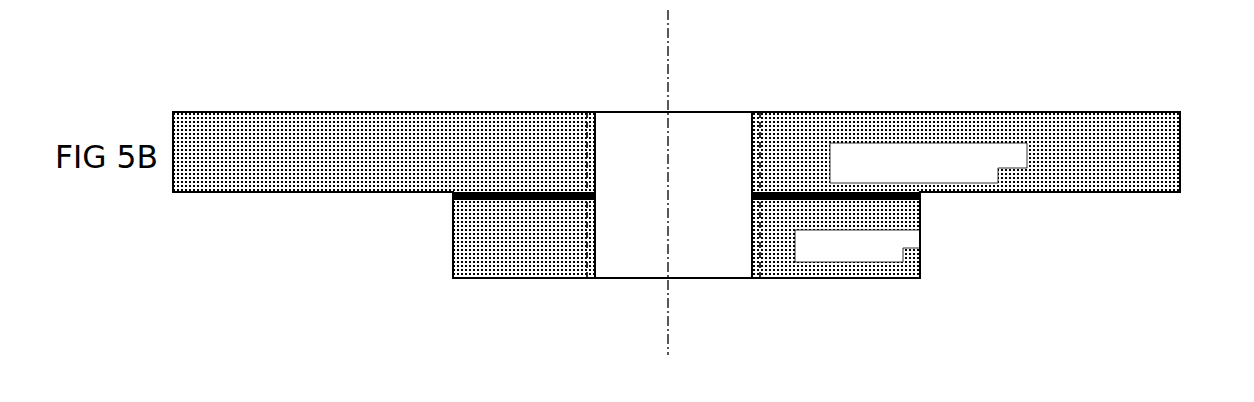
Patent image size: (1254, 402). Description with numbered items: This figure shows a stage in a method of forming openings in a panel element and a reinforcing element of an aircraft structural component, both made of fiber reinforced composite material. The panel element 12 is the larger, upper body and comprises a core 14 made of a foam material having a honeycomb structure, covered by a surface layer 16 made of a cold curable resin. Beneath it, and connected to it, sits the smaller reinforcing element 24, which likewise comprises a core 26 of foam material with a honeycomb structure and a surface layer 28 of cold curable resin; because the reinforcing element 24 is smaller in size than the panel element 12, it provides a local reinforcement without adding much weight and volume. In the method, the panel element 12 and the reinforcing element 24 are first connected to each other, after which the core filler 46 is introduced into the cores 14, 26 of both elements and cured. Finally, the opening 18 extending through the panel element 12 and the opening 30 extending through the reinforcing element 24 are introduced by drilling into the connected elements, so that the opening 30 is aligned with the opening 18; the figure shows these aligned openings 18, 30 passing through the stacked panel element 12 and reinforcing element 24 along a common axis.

The panel element 12 is at (1065, 125).
The core 14 is at (1120, 137).
The surface layer 16 is at (990, 103).
The opening 18 is at (750, 145).
The core filler 46 is at (752, 114).
The reinforcing element 24 is at (920, 262).
The core 26 is at (870, 262).
The surface layer 28 is at (923, 232).
The opening 30 is at (750, 252).